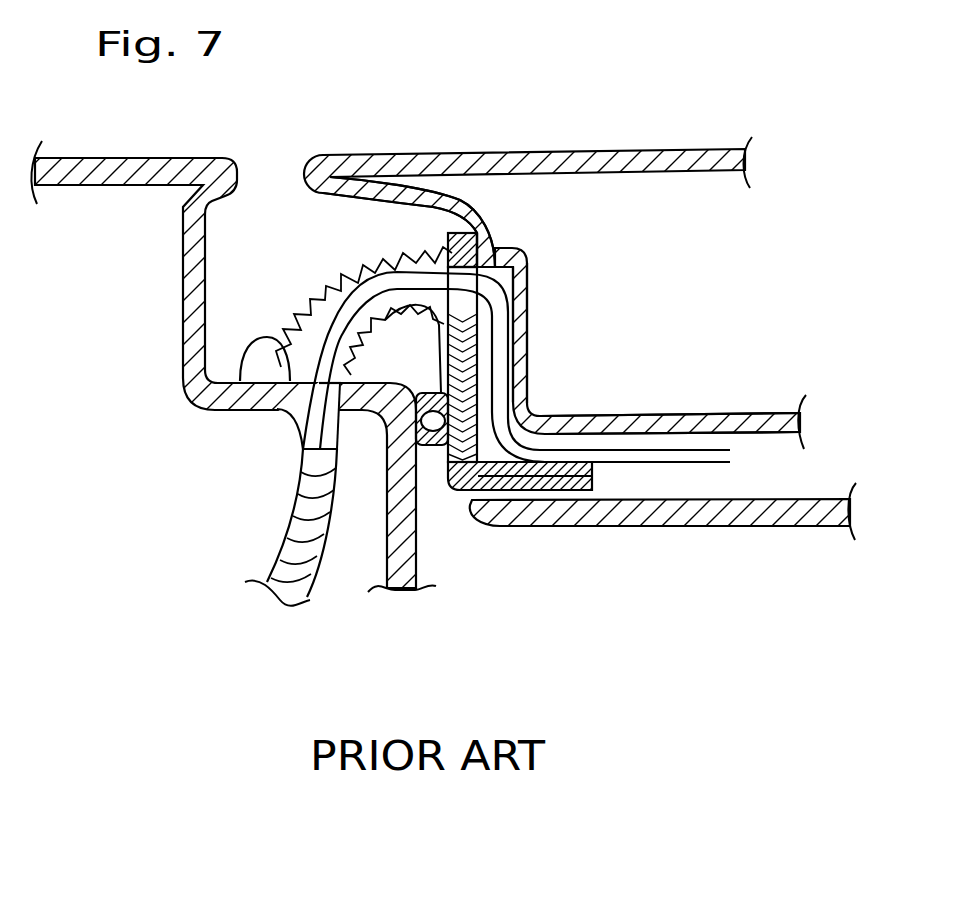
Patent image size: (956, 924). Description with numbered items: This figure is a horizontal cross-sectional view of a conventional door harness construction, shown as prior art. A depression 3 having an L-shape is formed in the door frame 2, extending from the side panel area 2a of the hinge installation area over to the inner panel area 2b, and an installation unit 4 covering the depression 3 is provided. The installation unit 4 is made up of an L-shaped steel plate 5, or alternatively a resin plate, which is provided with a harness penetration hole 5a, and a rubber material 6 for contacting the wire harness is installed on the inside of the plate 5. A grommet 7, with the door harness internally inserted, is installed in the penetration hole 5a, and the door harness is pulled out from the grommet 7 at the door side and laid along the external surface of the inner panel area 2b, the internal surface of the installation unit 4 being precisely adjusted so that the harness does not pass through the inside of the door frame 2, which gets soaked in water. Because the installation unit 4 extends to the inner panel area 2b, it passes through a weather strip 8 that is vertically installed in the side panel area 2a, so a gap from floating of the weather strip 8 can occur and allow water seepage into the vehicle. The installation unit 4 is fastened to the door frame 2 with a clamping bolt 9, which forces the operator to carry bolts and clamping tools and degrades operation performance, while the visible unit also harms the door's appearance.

The door frame 2 is at (592, 151).
The side panel area 2a is at (496, 240).
The inner panel area 2b is at (707, 414).
The depression 3 is at (525, 364).
The installation unit 4 is at (444, 388).
The L-shaped steel plate 5 is at (457, 482).
The harness penetration hole 5a is at (512, 300).
The rubber material 6 is at (515, 479).
The grommet 7 is at (349, 273).
The weather strip 8 is at (430, 447).
The clamping bolt 9 is at (448, 240).